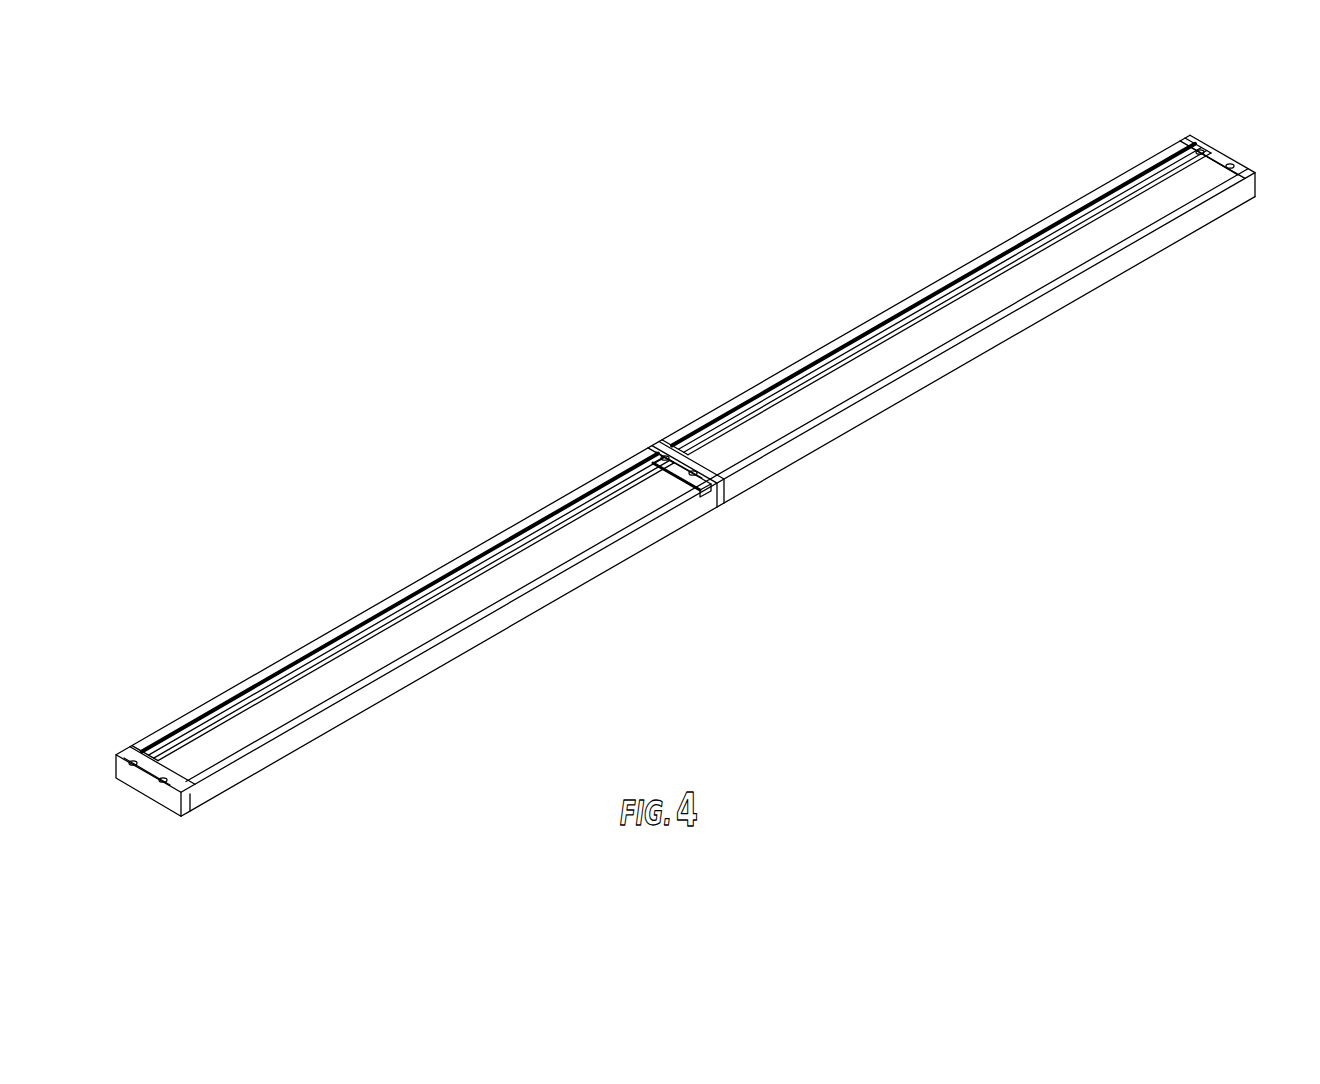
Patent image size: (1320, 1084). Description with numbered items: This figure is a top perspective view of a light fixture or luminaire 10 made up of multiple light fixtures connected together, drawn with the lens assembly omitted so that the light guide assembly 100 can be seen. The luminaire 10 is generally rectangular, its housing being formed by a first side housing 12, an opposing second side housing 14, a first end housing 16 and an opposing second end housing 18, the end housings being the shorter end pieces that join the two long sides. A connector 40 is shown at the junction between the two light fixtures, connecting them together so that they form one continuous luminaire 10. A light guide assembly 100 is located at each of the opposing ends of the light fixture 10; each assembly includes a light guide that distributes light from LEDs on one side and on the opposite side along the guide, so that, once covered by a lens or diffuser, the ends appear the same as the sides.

The luminaire 10 is at (410, 362).
The first side housing 12 is at (497, 537).
The second side housing 14 is at (462, 636).
The first end housing 16 is at (1252, 198).
The second end housing 18 is at (157, 797).
The connector 40 is at (724, 493).
The light guide assembly 100 is at (170, 778).